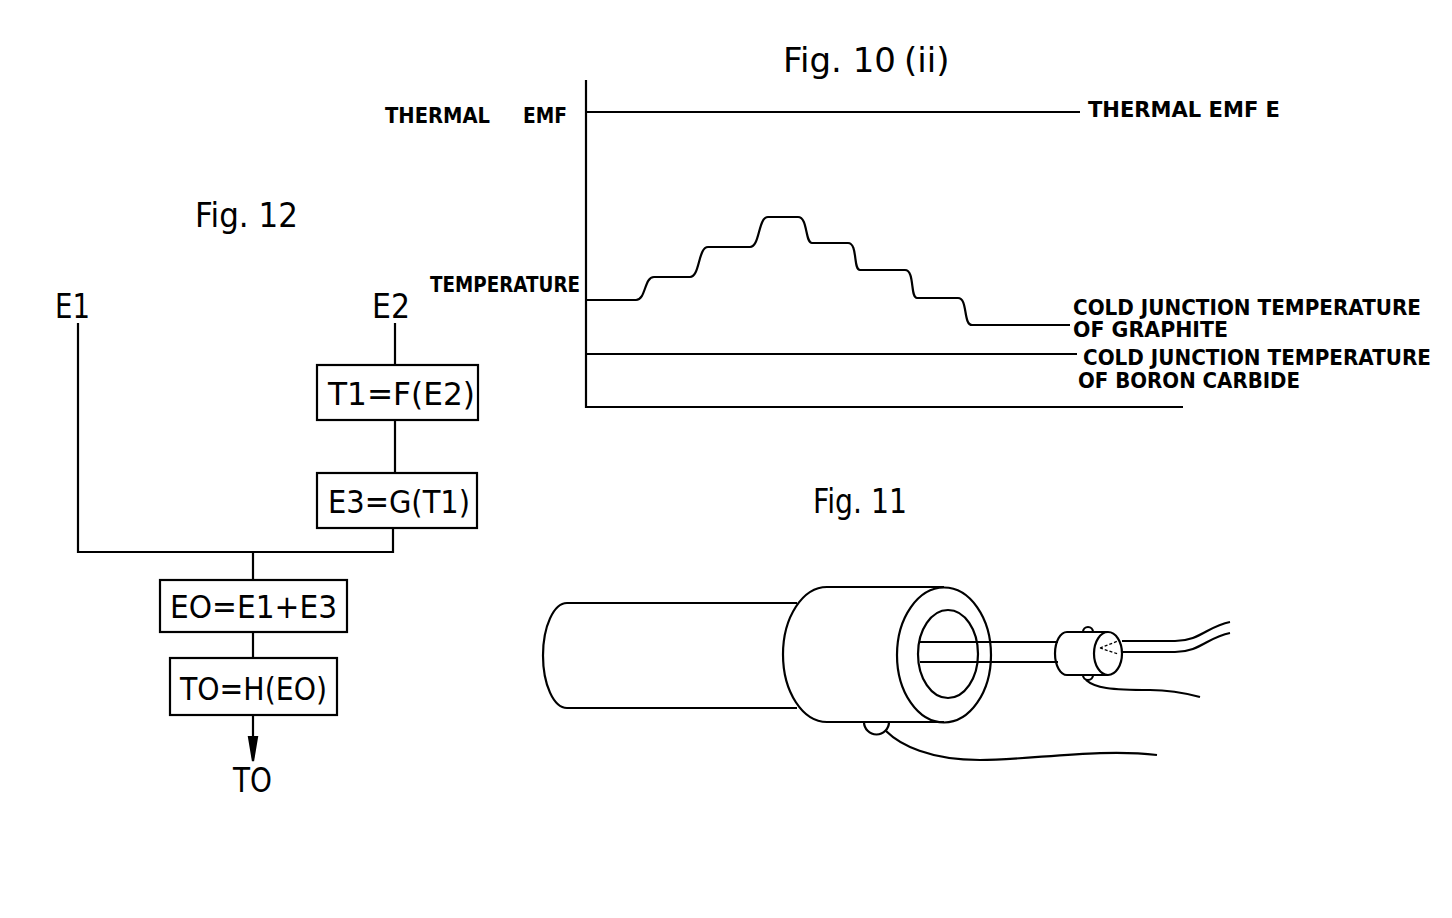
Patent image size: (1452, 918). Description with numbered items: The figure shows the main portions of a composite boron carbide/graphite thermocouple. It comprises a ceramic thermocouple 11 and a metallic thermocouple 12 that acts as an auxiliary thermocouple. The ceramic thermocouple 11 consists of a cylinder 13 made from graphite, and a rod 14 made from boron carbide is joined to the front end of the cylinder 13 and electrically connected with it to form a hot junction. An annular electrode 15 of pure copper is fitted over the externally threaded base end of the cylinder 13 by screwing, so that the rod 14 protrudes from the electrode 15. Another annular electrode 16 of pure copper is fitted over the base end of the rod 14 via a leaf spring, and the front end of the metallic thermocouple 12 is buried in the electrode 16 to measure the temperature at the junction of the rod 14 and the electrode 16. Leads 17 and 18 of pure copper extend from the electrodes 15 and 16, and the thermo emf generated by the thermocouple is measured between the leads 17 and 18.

The ceramic thermocouple 11 is at (713, 708).
The metallic thermocouple 12 is at (1148, 643).
The cylinder 13 is at (710, 612).
The rod 14 is at (1022, 648).
The annular electrode 15 is at (842, 703).
The annular electrode 16 is at (1070, 665).
The lead 17 is at (993, 757).
The lead 18 is at (1145, 688).